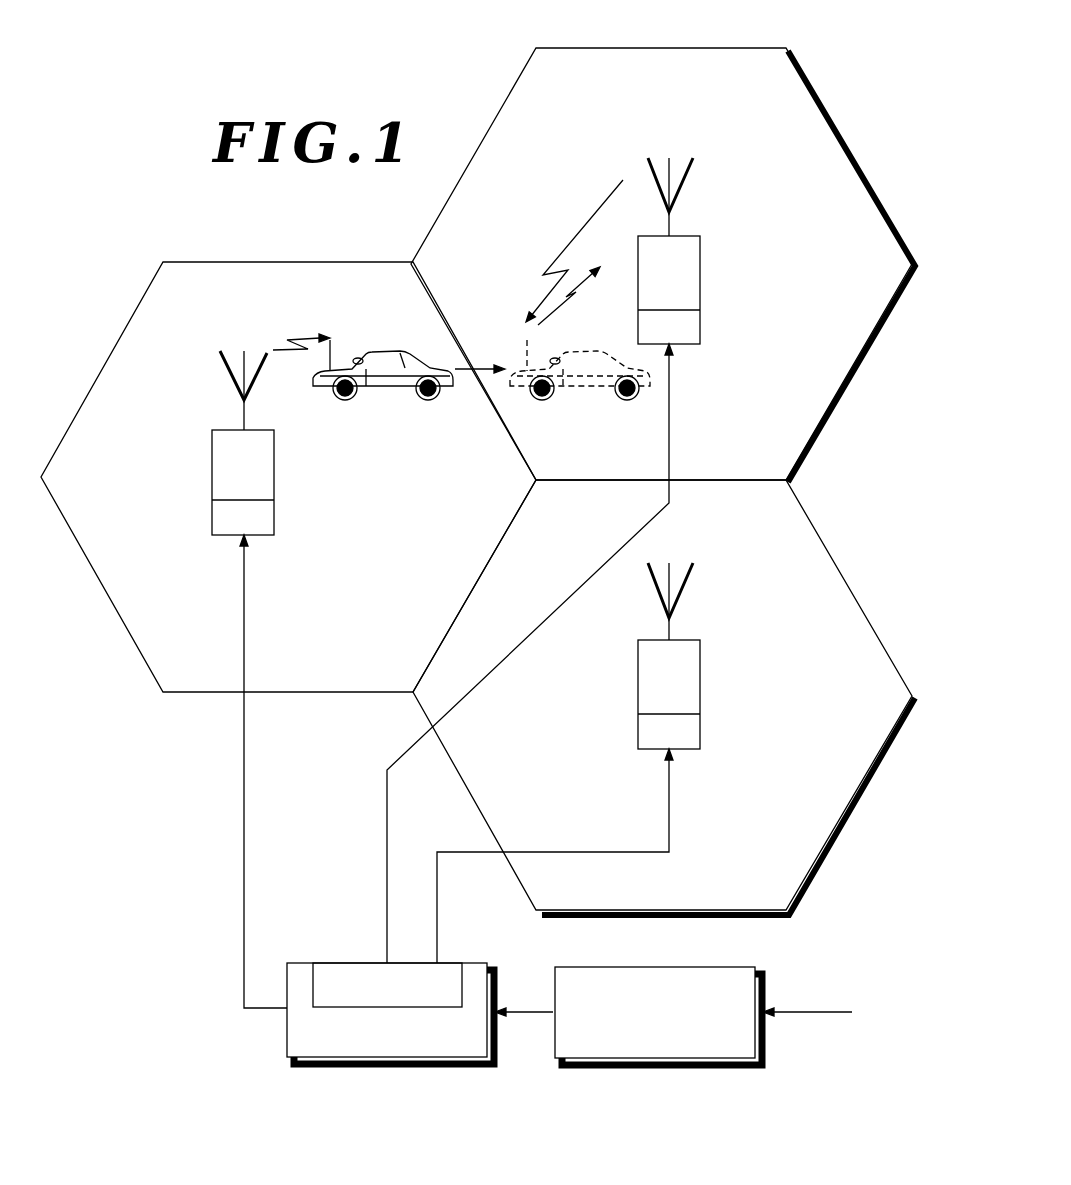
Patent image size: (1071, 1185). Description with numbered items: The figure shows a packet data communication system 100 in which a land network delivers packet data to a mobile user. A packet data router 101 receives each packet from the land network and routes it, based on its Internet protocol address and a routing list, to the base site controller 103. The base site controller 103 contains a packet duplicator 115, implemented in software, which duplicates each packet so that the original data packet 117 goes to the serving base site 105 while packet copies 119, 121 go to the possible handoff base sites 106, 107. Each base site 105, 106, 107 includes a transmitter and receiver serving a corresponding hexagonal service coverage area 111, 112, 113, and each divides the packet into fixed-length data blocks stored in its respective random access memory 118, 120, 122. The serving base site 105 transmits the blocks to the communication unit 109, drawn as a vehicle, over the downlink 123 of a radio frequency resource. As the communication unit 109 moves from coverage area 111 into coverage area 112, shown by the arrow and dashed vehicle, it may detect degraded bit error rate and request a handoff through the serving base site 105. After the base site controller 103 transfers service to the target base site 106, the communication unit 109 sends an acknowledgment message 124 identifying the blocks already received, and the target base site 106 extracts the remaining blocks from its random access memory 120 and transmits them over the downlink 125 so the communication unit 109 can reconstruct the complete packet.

The packet data communication system 100 is at (166, 760).
The packet data router 101 is at (612, 1065).
The base site controller 103 is at (390, 1017).
The base site 105 is at (211, 443).
The base site 106 is at (702, 251).
The base site 107 is at (637, 658).
The communication unit 109 is at (374, 388).
The service coverage area 111 is at (203, 260).
The service coverage area 112 is at (581, 47).
The service coverage area 113 is at (840, 571).
The packet duplicator 115 is at (360, 963).
The original data packet 117 is at (243, 847).
The random access memory 118 is at (212, 516).
The packet copy 119 is at (387, 868).
The random access memory 120 is at (700, 325).
The packet copy 121 is at (473, 851).
The random access memory 122 is at (641, 731).
The downlink 123 is at (305, 337).
The acknowledgment message 124 is at (582, 289).
The downlink 125 is at (582, 228).